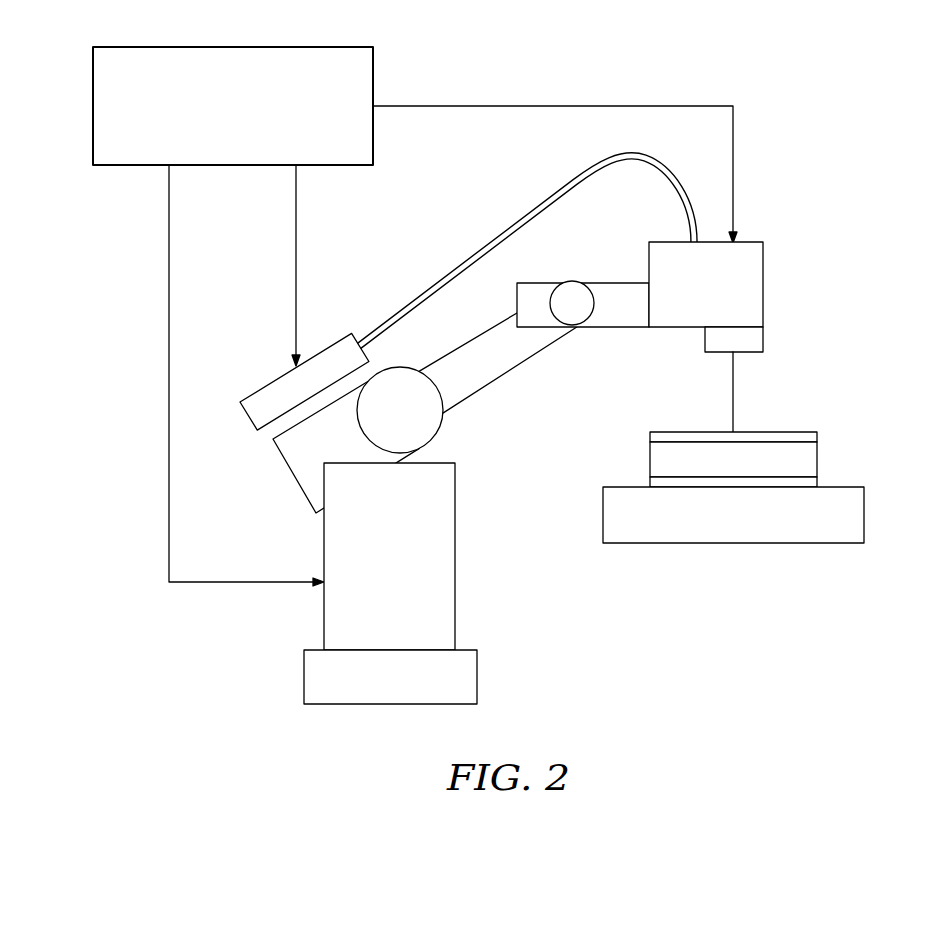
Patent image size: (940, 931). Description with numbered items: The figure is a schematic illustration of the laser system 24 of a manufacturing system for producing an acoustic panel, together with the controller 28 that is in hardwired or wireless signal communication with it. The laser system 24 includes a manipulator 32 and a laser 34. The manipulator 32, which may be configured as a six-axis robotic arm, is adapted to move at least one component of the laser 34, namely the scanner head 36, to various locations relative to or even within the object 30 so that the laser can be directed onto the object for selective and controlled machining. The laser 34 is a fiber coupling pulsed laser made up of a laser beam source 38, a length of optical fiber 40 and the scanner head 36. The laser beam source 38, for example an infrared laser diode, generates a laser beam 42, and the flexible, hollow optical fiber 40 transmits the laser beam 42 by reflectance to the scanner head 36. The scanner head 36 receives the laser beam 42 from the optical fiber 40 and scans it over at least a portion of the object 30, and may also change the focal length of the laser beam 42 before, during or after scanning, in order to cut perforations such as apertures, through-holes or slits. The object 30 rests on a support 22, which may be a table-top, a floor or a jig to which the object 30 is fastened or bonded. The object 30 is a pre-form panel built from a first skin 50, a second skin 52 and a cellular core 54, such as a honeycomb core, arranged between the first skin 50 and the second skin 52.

The support 22 is at (645, 545).
The laser system 24 is at (772, 182).
The controller 28 is at (376, 68).
The object 30 is at (745, 438).
The manipulator 32 is at (276, 519).
The laser 34 is at (464, 234).
The scanner head 36 is at (706, 297).
The laser beam source 38 is at (255, 385).
The optical fiber 40 is at (427, 288).
The laser beam 42 is at (735, 400).
The first skin 50 is at (818, 437).
The second skin 52 is at (818, 484).
The cellular core 54 is at (818, 460).